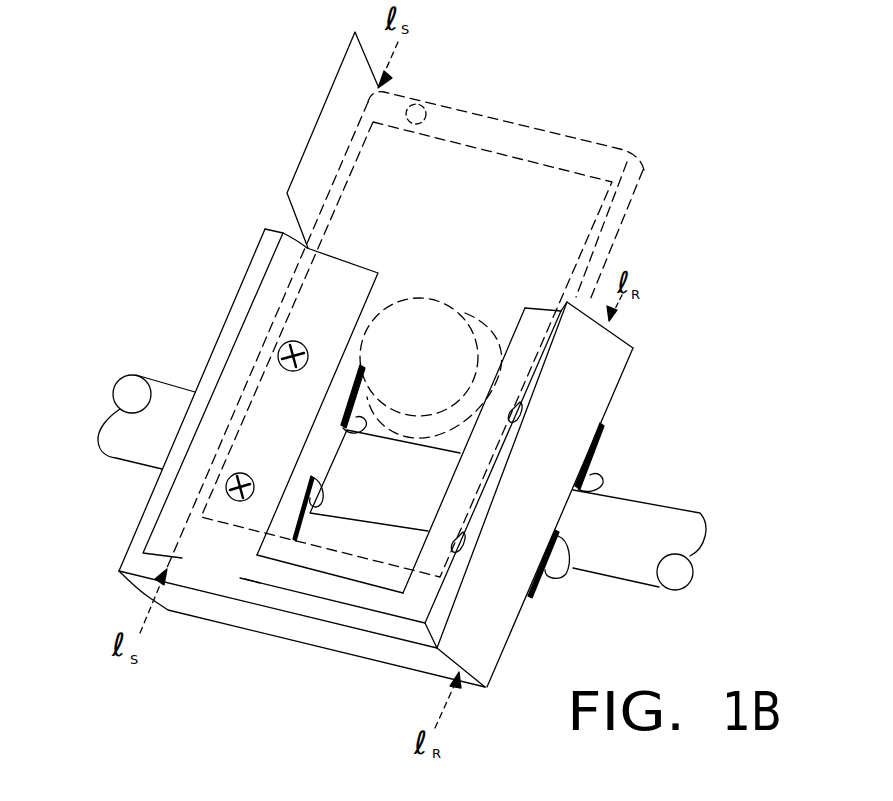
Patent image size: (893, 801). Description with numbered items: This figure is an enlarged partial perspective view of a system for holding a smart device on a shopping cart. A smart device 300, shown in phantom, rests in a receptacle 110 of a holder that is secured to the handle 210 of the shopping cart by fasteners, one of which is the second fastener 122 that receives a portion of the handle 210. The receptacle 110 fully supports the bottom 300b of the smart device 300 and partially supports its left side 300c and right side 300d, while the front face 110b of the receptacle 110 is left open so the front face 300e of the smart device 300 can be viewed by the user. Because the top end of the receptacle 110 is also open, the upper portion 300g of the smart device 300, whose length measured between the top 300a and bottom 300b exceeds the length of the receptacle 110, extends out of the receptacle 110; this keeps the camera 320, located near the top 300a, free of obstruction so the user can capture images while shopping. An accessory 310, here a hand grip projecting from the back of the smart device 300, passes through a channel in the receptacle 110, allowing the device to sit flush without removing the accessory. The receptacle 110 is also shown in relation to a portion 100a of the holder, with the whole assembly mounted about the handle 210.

The smart device 300 is at (684, 172).
The top of the smart device 300a is at (602, 115).
The bottom of the smart device 300b is at (269, 581).
The left side of the smart device 300c is at (340, 167).
The right side of the smart device 300d is at (625, 213).
The front face of the smart device 300e is at (492, 158).
The upper portion of the smart device 300g is at (323, 104).
The accessory 310 is at (428, 298).
The camera 320 is at (425, 106).
The receptacle 110 is at (620, 331).
The front face of the receptacle 110b is at (226, 313).
The frame portion 100a is at (590, 308).
The second fastener 122 is at (603, 452).
The handle 210 is at (699, 527).